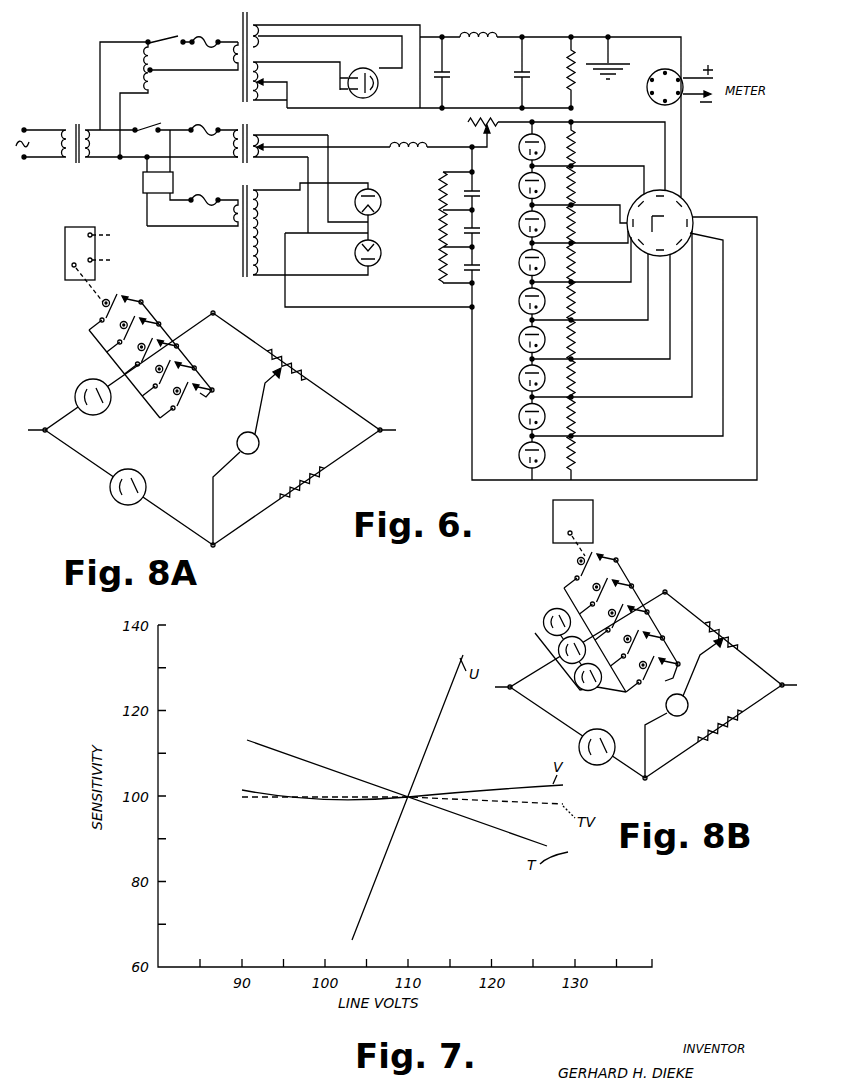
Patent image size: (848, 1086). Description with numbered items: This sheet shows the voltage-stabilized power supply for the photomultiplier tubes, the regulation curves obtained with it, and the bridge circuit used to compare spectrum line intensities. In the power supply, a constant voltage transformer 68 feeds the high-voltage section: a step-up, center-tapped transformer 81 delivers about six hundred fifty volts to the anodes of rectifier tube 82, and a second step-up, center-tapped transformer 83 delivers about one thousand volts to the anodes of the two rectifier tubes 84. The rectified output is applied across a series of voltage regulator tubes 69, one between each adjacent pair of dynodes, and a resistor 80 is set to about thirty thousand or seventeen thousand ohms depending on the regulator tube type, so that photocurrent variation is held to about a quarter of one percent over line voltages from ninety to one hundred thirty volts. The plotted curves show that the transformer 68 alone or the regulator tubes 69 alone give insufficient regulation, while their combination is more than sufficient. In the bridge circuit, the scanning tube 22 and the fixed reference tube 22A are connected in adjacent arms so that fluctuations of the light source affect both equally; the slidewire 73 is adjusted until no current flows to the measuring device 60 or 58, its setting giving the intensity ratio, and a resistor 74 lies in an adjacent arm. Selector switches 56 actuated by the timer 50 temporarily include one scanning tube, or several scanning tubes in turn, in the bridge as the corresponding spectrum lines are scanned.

In FIG. 6, the step-up center-tapped transformer 81 is at (243, 31).
In FIG. 6, the constant voltage transformer 68 is at (150, 80).
In FIG. 6, the rectifier tube 82 is at (374, 60).
In FIG. 6, the resistor 80 is at (473, 117).
In FIG. 6, the rectifier tubes 84 is at (391, 240).
In FIG. 6, the step-up center-tapped high-voltage transformer 83 is at (247, 298).
In FIG. 6, the voltage regulator tubes 69 is at (520, 457).
In FIG. 6, the scanning phototube 22 is at (692, 209).
In FIG. 8A, the scanning phototube 22 is at (77, 388).
In FIG. 8B, the scanning phototube 22 is at (574, 675).
In FIG. 8A, the fixed reference tube 22A is at (118, 503).
In FIG. 8B, the fixed reference tube 22A is at (605, 767).
In FIG. 8A, the timer 50 is at (88, 258).
In FIG. 8B, the timer 50 is at (582, 528).
In FIG. 8A, the selector switches 56 is at (188, 382).
In FIG. 8B, the selector switches 56 is at (654, 658).
In FIG. 8A, the bridge slidewire 73 is at (305, 362).
In FIG. 8B, the bridge slidewire 73 is at (737, 634).
In FIG. 8A, the resistor 74 is at (288, 488).
In FIG. 8B, the resistor 74 is at (727, 737).
In FIG. 8A, the measuring device 60 is at (262, 456).
In FIG. 8B, the measuring device 60 is at (693, 708).
In FIG. 8A, the measuring device 58 is at (259, 440).
In FIG. 8B, the measuring device 58 is at (688, 700).